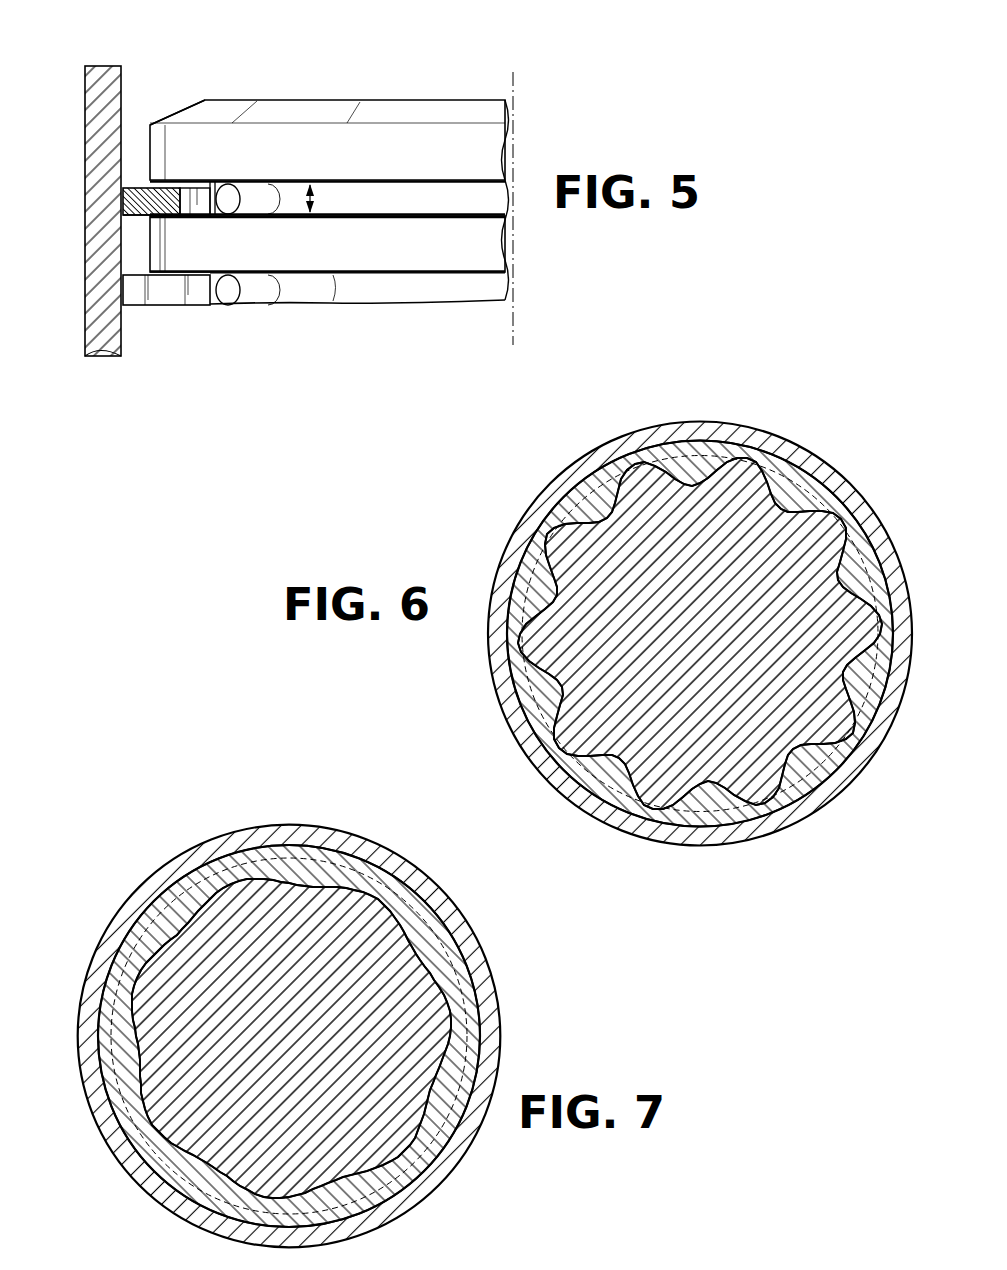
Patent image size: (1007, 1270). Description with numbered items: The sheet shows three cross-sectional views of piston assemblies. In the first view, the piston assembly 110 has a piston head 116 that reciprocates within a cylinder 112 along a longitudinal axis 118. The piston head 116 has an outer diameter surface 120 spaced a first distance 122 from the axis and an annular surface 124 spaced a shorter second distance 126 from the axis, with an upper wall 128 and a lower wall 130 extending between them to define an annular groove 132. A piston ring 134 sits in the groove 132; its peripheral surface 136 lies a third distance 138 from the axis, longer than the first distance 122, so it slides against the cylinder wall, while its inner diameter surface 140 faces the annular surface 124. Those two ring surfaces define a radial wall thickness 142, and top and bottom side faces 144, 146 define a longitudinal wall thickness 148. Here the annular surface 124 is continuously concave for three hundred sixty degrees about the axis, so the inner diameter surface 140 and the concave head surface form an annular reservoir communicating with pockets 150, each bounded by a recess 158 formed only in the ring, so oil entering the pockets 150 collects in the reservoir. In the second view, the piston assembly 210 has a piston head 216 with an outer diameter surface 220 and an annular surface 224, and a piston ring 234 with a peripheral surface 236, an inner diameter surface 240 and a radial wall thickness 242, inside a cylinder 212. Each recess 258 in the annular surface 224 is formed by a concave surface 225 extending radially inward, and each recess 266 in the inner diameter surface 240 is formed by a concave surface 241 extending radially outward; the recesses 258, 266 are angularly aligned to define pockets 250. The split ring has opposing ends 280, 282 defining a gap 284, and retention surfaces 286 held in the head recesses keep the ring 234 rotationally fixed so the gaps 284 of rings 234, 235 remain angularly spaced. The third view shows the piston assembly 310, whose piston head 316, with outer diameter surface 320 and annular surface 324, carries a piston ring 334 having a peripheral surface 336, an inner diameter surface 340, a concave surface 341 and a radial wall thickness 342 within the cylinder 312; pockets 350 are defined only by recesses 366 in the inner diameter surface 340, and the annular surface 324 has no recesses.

In FIG. 5, the piston assembly 110 is at (160, 345).
In FIG. 5, the cylinder 112 is at (121, 350).
In FIG. 5, the piston head 116 is at (437, 284).
In FIG. 5, the longitudinal axis 118 is at (516, 138).
In FIG. 5, the outer diameter surface 120 is at (98, 272).
In FIG. 5, the first distance 122 is at (510, 35).
In FIG. 5, the annular surface 124 is at (357, 303).
In FIG. 5, the second distance 126 is at (213, 180).
In FIG. 5, the upper wall 128 is at (138, 178).
In FIG. 5, the lower wall 130 is at (150, 238).
In FIG. 5, the annular groove 132 is at (327, 200).
In FIG. 5, the piston ring 134 is at (152, 188).
In FIG. 5, the peripheral surface 136 is at (125, 200).
In FIG. 5, the third distance 138 is at (510, 13).
In FIG. 5, the inner diameter surface 140 is at (232, 212).
In FIG. 5, the radial wall thickness 142 is at (210, 305).
In FIG. 5, the top side face 144 is at (125, 186).
In FIG. 5, the bottom side face 146 is at (155, 212).
In FIG. 5, the longitudinal wall thickness 148 is at (312, 196).
In FIG. 5, the pockets 150 is at (166, 177).
In FIG. 5, the recess 158 is at (166, 290).
In FIG. 6, the piston assembly 210 is at (690, 620).
In FIG. 6, the cylinder 212 is at (690, 634).
In FIG. 6, the piston head 216 is at (888, 560).
In FIG. 6, the outer diameter surface 220 is at (520, 702).
In FIG. 6, the annular surface 224 is at (665, 634).
In FIG. 6, the concave surface 225 is at (722, 488).
In FIG. 6, the piston ring 234 is at (665, 634).
In FIG. 6, the second compression ring 235 is at (648, 446).
In FIG. 6, the peripheral surface 236 is at (507, 595).
In FIG. 6, the inner diameter surface 240 is at (555, 505).
In FIG. 6, the concave surface 241 is at (833, 525).
In FIG. 6, the radial wall thickness 242 is at (856, 692).
In FIG. 6, the pockets 250 is at (662, 792).
In FIG. 6, the recess 258 is at (780, 435).
In FIG. 6, the recess 266 is at (870, 483).
In FIG. 6, the end 280 is at (583, 470).
In FIG. 6, the end 282 is at (616, 462).
In FIG. 6, the gap 284 is at (592, 455).
In FIG. 6, the retention surface 286 is at (880, 625).
In FIG. 7, the piston assembly 310 is at (268, 1022).
In FIG. 7, the cylinder 312 is at (268, 1038).
In FIG. 7, the piston head 316 is at (340, 1226).
In FIG. 7, the outer diameter surface 320 is at (110, 1125).
In FIG. 7, the annular surface 324 is at (253, 1036).
In FIG. 7, the piston ring 334 is at (253, 1036).
In FIG. 7, the peripheral surface 336 is at (100, 1005).
In FIG. 7, the inner diameter surface 340 is at (120, 945).
In FIG. 7, the concave surface 341 is at (440, 968).
In FIG. 7, the radial wall thickness 342 is at (433, 1132).
In FIG. 7, the pockets 350 is at (235, 1205).
In FIG. 7, the recess 366 is at (506, 947).